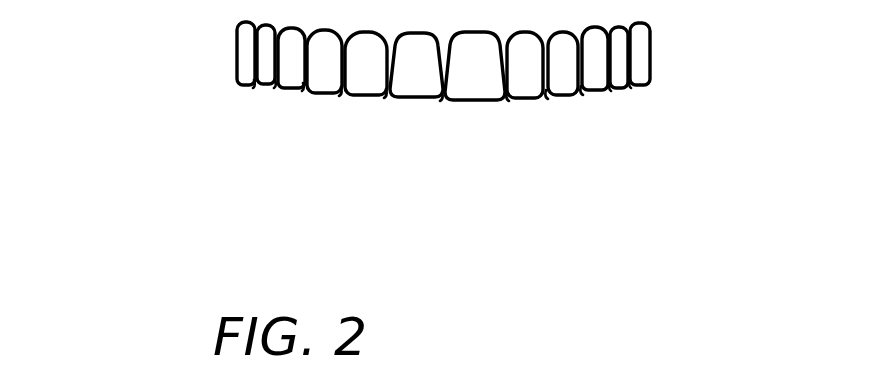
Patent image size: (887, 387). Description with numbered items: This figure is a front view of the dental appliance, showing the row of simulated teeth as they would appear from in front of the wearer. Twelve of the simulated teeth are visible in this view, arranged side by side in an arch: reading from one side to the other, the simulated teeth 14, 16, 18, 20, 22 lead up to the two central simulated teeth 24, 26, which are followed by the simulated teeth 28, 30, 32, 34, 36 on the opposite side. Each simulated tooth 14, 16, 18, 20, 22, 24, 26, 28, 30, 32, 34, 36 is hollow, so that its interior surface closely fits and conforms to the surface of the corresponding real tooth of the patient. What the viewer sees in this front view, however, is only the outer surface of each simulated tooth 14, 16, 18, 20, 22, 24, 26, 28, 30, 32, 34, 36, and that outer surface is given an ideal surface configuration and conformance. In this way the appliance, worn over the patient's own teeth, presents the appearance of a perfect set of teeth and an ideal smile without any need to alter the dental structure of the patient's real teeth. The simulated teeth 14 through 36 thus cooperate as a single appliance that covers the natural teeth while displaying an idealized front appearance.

The simulated tooth 14 is at (632, 90).
The simulated tooth 16 is at (606, 92).
The simulated tooth 18 is at (586, 95).
The simulated tooth 20 is at (572, 100).
The simulated tooth 22 is at (530, 100).
The simulated tooth 24 is at (480, 102).
The simulated tooth 26 is at (426, 98).
The simulated tooth 28 is at (372, 97).
The simulated tooth 30 is at (320, 95).
The simulated tooth 32 is at (288, 92).
The simulated tooth 34 is at (264, 89).
The simulated tooth 36 is at (244, 86).